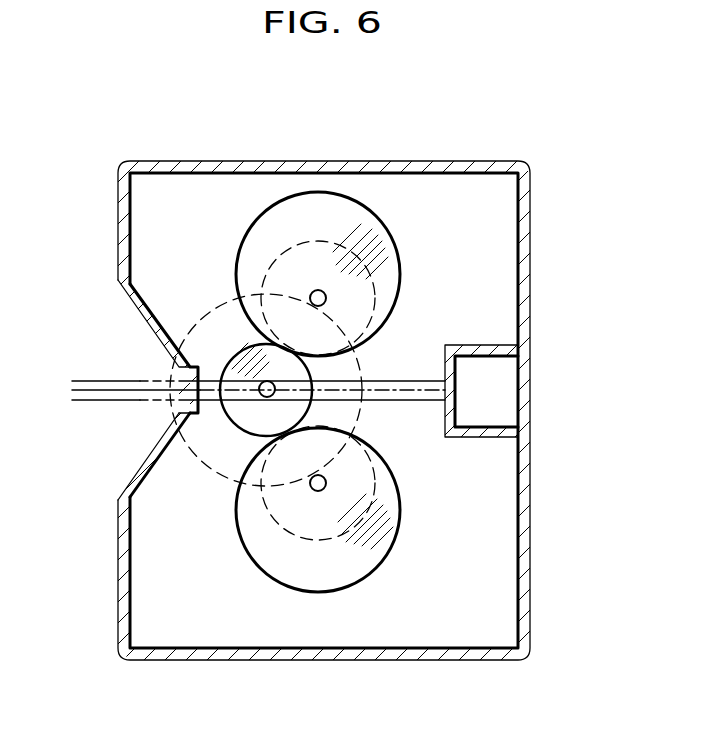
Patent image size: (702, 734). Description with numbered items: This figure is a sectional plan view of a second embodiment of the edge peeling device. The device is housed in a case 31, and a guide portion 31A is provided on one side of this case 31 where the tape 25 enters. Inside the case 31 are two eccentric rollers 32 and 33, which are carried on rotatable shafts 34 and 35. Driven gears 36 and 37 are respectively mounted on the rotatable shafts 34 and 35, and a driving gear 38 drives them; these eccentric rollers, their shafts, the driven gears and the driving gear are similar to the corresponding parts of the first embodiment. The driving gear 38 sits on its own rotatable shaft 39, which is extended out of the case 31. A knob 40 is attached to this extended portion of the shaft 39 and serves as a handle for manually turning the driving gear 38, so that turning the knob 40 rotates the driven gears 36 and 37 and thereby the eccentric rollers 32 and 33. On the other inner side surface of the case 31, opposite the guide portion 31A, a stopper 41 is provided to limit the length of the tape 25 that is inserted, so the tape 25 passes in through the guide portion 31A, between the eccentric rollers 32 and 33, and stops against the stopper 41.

The tape 25 is at (105, 378).
The case 31 is at (535, 168).
The guide portion 31A is at (145, 455).
The eccentric roller 32 is at (362, 212).
The eccentric roller 33 is at (378, 552).
The rotatable shaft 34 is at (324, 292).
The rotatable shaft 35 is at (325, 491).
The driven gear 36 is at (289, 249).
The driven gear 37 is at (291, 537).
The driving gear 38 is at (236, 355).
The rotatable shaft 39 is at (261, 395).
The knob 40 is at (202, 328).
The stopper 41 is at (487, 345).